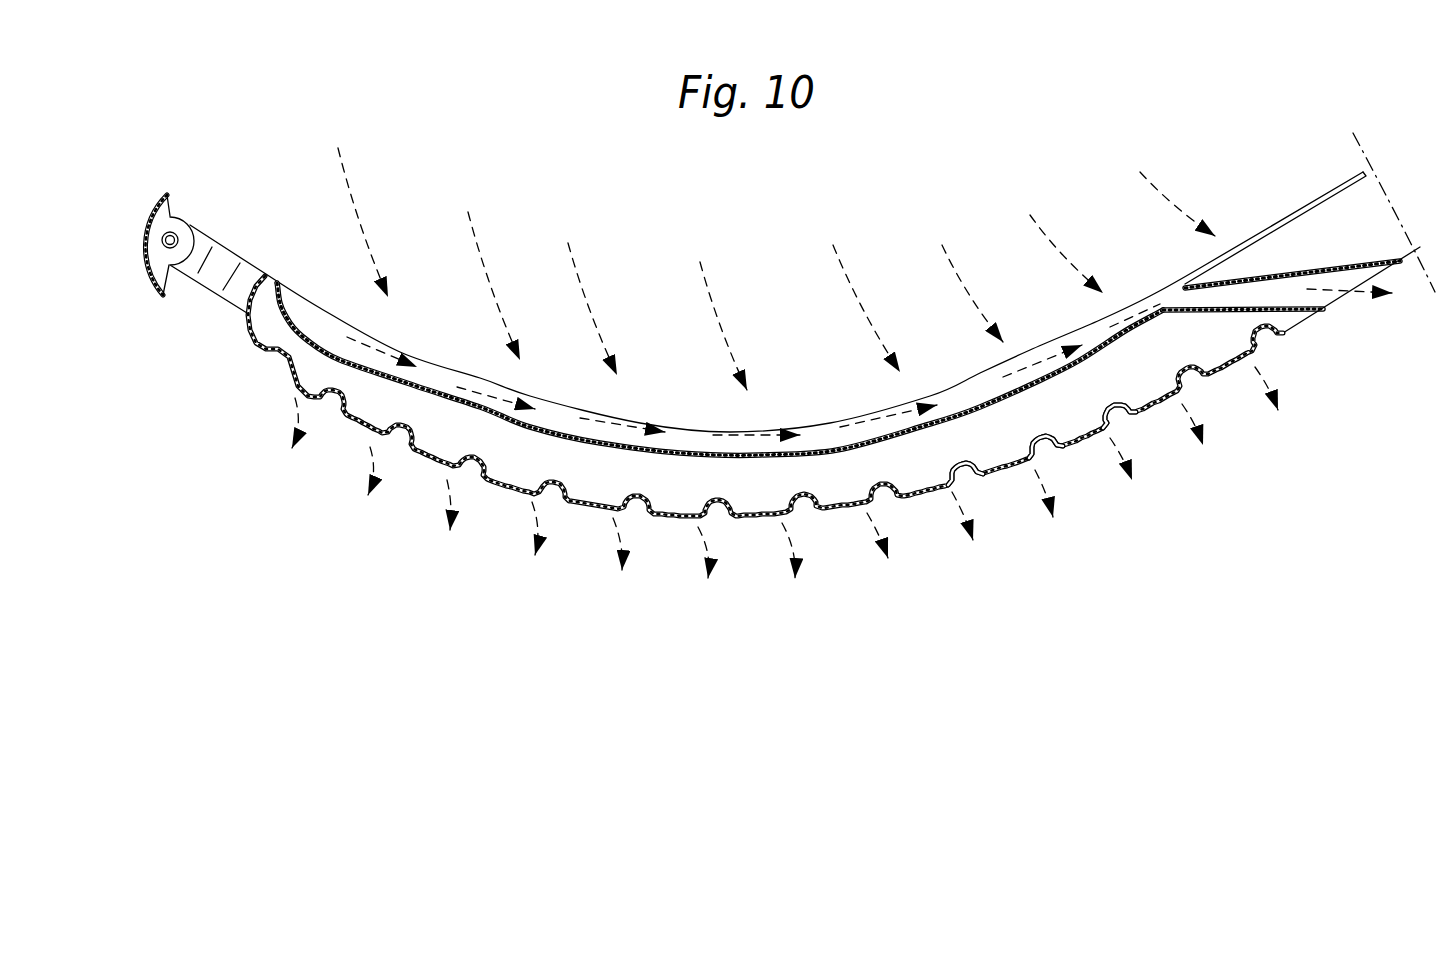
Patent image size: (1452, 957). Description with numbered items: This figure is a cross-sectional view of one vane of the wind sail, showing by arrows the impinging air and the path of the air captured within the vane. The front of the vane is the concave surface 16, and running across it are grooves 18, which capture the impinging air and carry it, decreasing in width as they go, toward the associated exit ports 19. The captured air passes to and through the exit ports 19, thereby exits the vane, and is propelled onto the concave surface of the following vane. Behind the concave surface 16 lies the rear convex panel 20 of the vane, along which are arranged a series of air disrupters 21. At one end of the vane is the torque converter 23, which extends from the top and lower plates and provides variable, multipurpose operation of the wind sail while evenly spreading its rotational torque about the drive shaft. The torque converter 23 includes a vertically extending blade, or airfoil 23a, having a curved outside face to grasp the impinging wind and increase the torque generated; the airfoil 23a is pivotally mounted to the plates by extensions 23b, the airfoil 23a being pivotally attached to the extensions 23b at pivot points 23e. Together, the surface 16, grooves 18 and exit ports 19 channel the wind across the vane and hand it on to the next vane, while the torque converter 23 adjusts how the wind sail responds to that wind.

The concave surface 16 is at (808, 425).
The grooves 18 is at (453, 399).
The exit ports 19 is at (1332, 298).
The rear convex panel 20 is at (430, 467).
The air disrupters 21 is at (962, 466).
The torque converter 23 is at (205, 253).
The airfoil 23a is at (161, 203).
The extensions 23b is at (226, 252).
The pivot points 23e is at (178, 235).